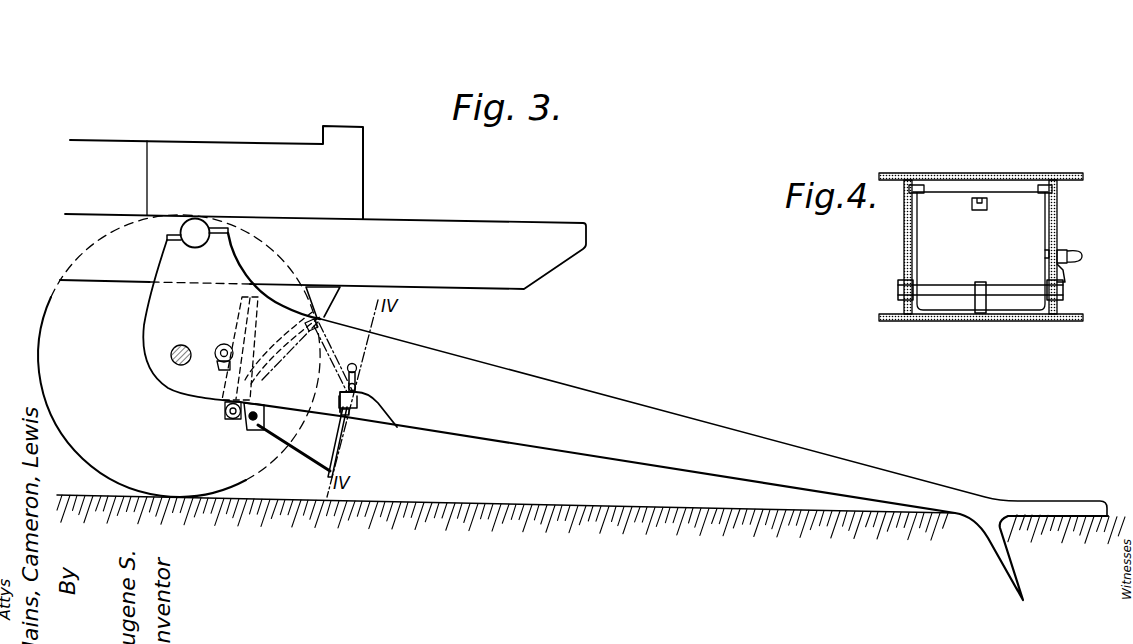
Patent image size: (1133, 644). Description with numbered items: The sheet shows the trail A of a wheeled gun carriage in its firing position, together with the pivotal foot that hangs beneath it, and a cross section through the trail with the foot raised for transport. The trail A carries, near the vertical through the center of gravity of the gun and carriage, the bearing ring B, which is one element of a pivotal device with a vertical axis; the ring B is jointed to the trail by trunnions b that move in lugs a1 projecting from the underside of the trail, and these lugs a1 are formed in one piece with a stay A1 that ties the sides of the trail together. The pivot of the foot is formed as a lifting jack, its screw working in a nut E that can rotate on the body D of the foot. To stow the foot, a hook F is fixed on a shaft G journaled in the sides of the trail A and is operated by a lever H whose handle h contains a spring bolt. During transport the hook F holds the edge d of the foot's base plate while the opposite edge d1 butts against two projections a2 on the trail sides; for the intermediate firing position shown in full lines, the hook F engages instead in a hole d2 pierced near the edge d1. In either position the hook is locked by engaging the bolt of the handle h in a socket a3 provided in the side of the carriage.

In FIG. 3, the trail A is at (523, 381).
In FIG. 4, the trail A is at (903, 236).
In FIG. 3, the stay A1 is at (240, 311).
In FIG. 3, the lugs a1 is at (226, 407).
In FIG. 3, the projections a2 is at (322, 320).
In FIG. 4, the projections a2 is at (916, 189).
In FIG. 4, the socket a3 is at (1046, 255).
In FIG. 3, the trunnions b is at (228, 414).
In FIG. 3, the bearing ring B is at (245, 420).
In FIG. 3, the body of the foot D is at (290, 430).
In FIG. 3, the nut E is at (254, 424).
In FIG. 3, the edge of the base plate d is at (324, 477).
In FIG. 4, the edge of the base plate d is at (1020, 312).
In FIG. 4, the opposite edge of the base plate d1 is at (1003, 191).
In FIG. 3, the hole d2 is at (346, 420).
In FIG. 4, the hole d2 is at (980, 197).
In FIG. 3, the hook F is at (350, 408).
In FIG. 4, the hook F is at (978, 310).
In FIG. 3, the shaft G is at (357, 391).
In FIG. 3, the lever H is at (357, 380).
In FIG. 4, the lever H is at (1064, 277).
In FIG. 3, the handle h is at (357, 367).
In FIG. 4, the handle h is at (1076, 246).